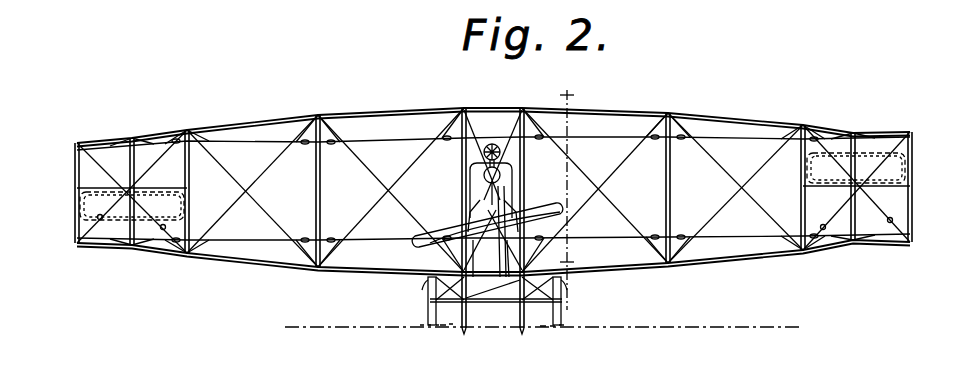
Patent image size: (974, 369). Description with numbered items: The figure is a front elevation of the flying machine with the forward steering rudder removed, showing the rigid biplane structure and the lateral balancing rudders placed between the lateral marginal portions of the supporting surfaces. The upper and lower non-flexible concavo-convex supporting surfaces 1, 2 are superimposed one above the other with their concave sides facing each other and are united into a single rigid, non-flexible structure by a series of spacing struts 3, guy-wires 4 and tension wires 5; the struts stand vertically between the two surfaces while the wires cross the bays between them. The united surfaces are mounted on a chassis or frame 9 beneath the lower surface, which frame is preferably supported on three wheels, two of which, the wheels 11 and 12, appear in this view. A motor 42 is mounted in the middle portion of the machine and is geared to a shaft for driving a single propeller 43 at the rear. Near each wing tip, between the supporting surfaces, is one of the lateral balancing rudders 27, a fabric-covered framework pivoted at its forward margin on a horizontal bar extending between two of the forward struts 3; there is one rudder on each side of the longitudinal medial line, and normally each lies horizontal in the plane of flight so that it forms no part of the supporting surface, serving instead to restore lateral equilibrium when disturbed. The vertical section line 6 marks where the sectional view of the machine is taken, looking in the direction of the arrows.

The non-flexible concavo-convex supporting surface 1 is at (263, 264).
The non-flexible concavo-convex supporting surface 2 is at (256, 126).
The spacing struts 3 is at (75, 174).
The guy-wires 4 is at (228, 178).
The tension wires 5 is at (382, 138).
The section line 6— 6 is at (570, 187).
The chassis or frame 9 is at (464, 322).
The wheel 11 is at (561, 305).
The wheel 12 is at (428, 305).
The lateral balancing rudders 27 is at (120, 220).
The motor 42 is at (477, 195).
The propeller 43 is at (572, 217).